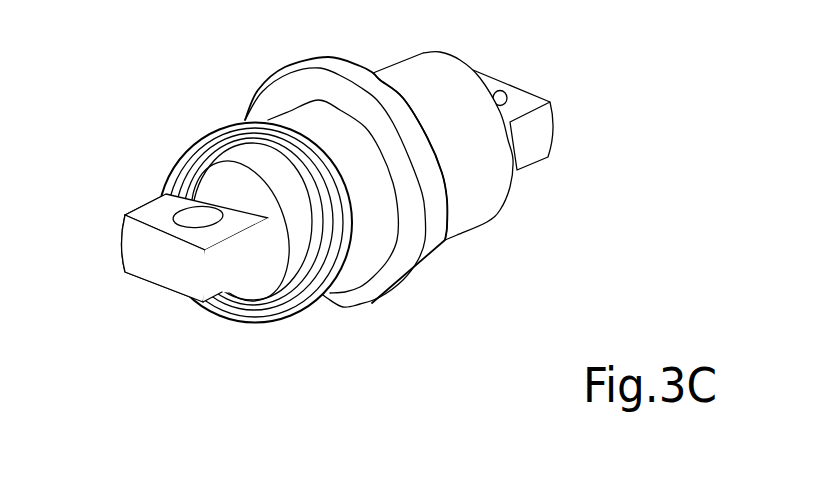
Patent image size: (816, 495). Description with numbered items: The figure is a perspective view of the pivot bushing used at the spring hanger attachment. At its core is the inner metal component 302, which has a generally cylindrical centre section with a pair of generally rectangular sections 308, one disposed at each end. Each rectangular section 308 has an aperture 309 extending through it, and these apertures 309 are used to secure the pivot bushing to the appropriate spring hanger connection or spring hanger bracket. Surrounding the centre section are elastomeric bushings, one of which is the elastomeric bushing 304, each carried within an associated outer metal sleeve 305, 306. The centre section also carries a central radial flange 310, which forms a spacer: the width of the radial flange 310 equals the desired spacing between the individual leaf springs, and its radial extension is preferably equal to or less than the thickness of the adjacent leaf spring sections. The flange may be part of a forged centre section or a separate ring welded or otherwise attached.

The inner metal component 302 is at (358, 174).
The elastomeric bushing 304 is at (210, 146).
The outer metal sleeve 305 is at (425, 75).
The outer metal sleeve 306 is at (307, 128).
The generally rectangular section 308 is at (557, 125).
The aperture 309 is at (497, 92).
The central radial flange 310 is at (428, 257).